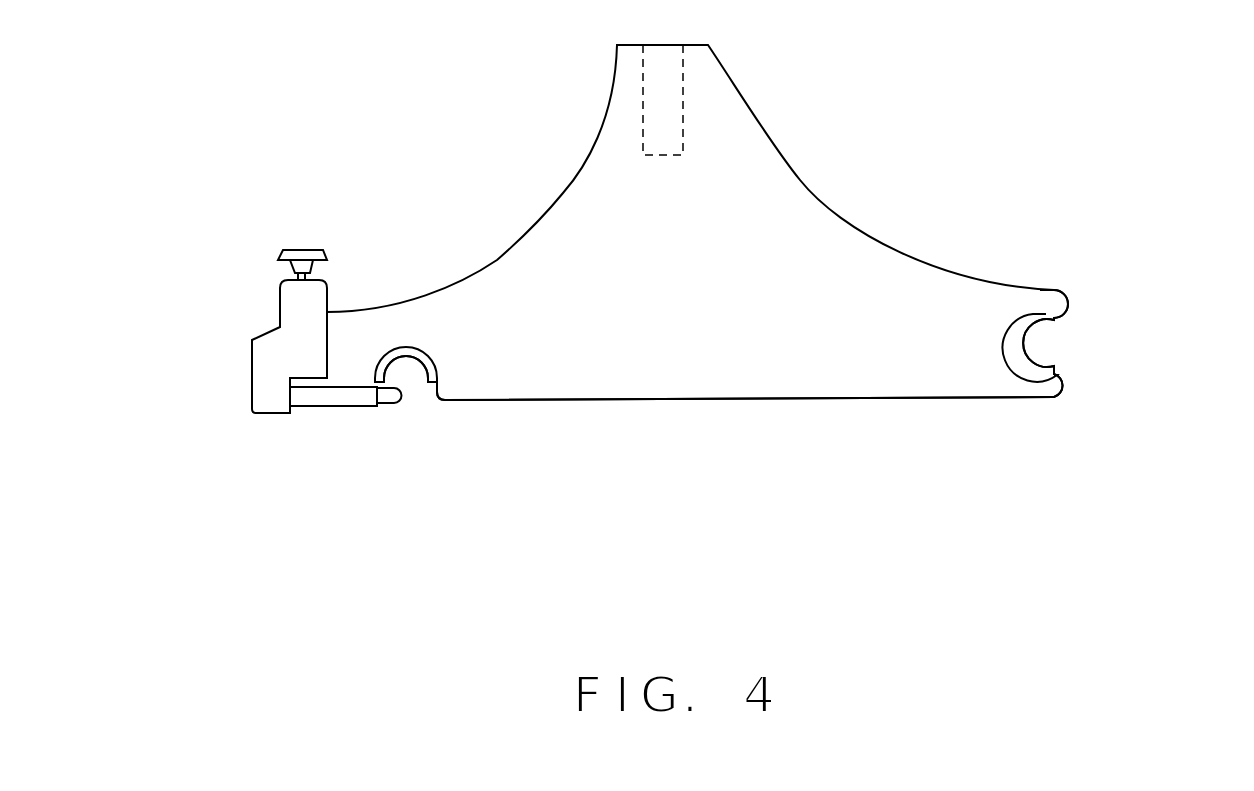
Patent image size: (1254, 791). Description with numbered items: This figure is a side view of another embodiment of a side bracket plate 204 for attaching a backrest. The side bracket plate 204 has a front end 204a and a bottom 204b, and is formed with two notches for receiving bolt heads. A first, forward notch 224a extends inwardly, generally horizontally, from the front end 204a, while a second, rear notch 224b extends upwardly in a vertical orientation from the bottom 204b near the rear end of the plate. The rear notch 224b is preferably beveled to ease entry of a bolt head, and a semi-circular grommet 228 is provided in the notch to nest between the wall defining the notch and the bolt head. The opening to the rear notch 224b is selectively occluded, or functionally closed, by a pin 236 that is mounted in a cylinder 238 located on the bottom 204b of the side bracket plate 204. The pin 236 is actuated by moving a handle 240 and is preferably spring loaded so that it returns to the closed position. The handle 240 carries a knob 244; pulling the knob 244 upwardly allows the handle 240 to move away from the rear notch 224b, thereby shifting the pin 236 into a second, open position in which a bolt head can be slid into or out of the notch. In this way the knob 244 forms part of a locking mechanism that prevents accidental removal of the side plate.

The side bracket plate 204 is at (745, 436).
The front end 204a is at (1067, 380).
The bottom 204b is at (590, 399).
The forward notch 224a is at (1047, 348).
The rear notch 224b is at (408, 383).
The semi-circular grommet 228 is at (1047, 310).
The pin 236 is at (393, 404).
The cylinder 238 is at (403, 350).
The handle 240 is at (260, 348).
The knob 244 is at (312, 250).